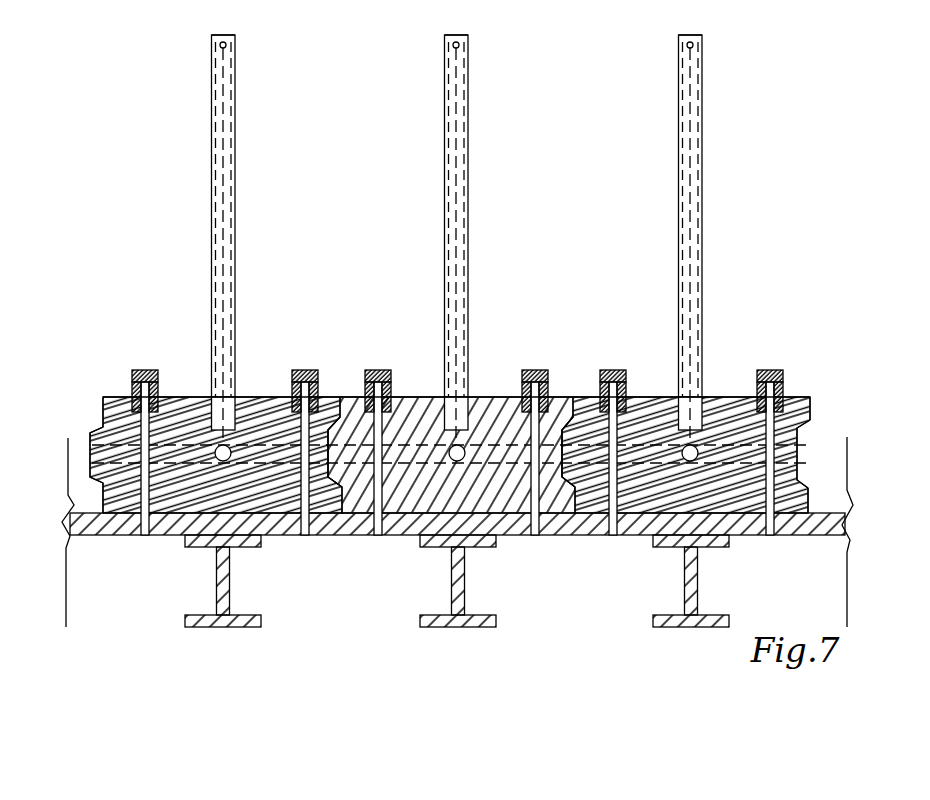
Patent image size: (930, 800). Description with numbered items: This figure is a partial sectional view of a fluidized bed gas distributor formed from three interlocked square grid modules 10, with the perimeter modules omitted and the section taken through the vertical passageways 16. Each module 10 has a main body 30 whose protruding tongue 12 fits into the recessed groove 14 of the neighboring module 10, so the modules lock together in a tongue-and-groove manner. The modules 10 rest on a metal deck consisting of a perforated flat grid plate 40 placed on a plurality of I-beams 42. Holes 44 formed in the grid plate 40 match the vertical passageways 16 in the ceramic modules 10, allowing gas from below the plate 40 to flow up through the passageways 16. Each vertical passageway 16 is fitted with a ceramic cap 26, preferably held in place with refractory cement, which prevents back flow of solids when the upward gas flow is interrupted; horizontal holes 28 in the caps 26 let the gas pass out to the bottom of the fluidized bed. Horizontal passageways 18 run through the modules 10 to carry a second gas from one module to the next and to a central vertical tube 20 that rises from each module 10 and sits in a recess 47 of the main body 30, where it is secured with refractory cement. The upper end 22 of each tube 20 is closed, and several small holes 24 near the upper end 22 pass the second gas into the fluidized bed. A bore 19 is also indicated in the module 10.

The square grid module 10 is at (92, 408).
The tongue 12 is at (90, 440).
The groove 14 is at (798, 450).
The vertical passageway 16 is at (92, 470).
The horizontal passageway 18 is at (225, 461).
The bore 19 is at (232, 391).
The vertical tube 20 is at (211, 162).
The upper end 22 is at (214, 35).
The small hole 24 is at (226, 45).
The cap 26 is at (145, 370).
The horizontal hole 28 is at (132, 379).
The main body 30 is at (175, 397).
The grid plate 40 is at (120, 536).
The I-beam 42 is at (216, 584).
The hole 44 is at (147, 537).
The recess 47 is at (211, 342).